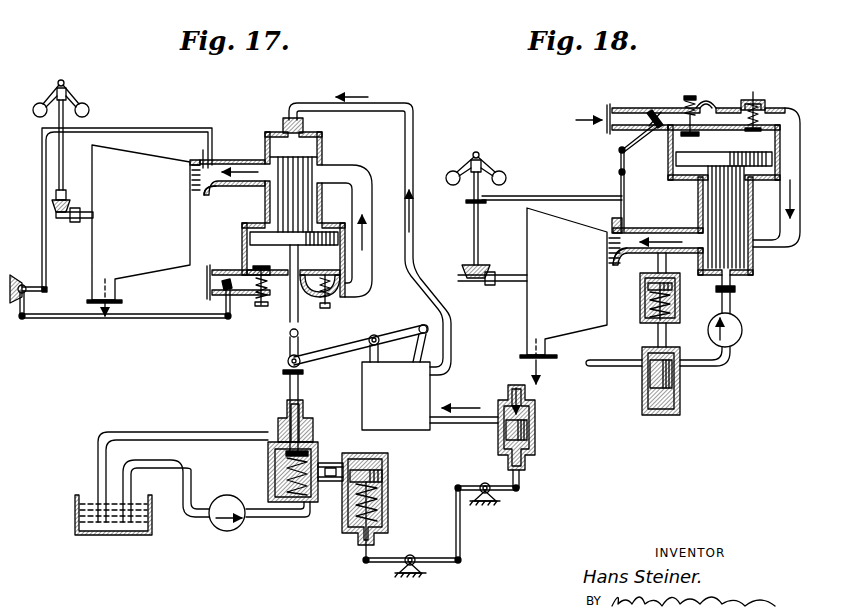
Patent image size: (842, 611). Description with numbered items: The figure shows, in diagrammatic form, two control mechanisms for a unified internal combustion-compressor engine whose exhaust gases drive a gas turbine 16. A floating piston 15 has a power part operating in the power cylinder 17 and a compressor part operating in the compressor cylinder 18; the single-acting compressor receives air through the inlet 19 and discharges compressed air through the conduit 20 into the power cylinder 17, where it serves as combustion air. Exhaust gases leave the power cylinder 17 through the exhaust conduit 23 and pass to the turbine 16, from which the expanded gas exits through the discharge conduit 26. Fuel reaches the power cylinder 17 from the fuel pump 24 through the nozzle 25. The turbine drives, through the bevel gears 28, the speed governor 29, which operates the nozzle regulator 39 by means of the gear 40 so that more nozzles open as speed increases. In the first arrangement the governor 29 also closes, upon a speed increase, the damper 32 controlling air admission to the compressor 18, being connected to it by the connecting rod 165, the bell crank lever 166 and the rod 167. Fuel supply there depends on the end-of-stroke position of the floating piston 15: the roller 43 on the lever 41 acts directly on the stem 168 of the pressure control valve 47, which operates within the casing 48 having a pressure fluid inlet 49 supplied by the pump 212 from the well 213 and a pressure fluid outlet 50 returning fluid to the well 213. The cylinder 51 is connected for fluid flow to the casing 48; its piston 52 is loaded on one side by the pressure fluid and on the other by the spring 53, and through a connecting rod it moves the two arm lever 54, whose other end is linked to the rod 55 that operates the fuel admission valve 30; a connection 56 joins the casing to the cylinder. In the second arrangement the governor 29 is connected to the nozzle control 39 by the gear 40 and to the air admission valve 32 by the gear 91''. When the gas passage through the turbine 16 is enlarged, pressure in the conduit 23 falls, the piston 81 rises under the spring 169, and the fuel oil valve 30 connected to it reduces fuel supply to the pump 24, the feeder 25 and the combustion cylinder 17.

In FIG. 17, the floating piston 15 is at (296, 207).
In FIG. 17, the gas turbine 16 is at (146, 222).
In FIG. 18, the gas turbine 16 is at (574, 281).
In FIG. 17, the power cylinder 17 is at (307, 143).
In FIG. 18, the power cylinder 17 is at (740, 276).
In FIG. 17, the compressor cylinder 18 is at (252, 262).
In FIG. 18, the compressor cylinder 18 is at (720, 136).
In FIG. 17, the inlet 19 is at (250, 268).
In FIG. 18, the inlet 19 is at (610, 106).
In FIG. 17, the conduit 20 is at (370, 172).
In FIG. 18, the conduit 20 is at (788, 249).
In FIG. 17, the exhaust conduit 23 is at (233, 166).
In FIG. 18, the exhaust conduit 23 is at (659, 232).
In FIG. 17, the fuel pump 24 is at (396, 396).
In FIG. 18, the fuel pump 24 is at (742, 340).
In FIG. 17, the nozzle 25 is at (285, 122).
In FIG. 18, the nozzle 25 is at (735, 300).
In FIG. 17, the discharge conduit 26 is at (122, 290).
In FIG. 18, the discharge conduit 26 is at (550, 349).
In FIG. 17, the bevel gears 28 is at (60, 225).
In FIG. 18, the bevel gears 28 is at (481, 286).
In FIG. 17, the speed governor 29 is at (61, 80).
In FIG. 18, the speed governor 29 is at (478, 153).
In FIG. 17, the fuel valve 30 is at (498, 445).
In FIG. 18, the fuel valve 30 is at (680, 392).
In FIG. 17, the damper 32 is at (222, 285).
In FIG. 18, the damper 32 is at (658, 110).
In FIG. 17, the nozzle regulator 39 is at (212, 195).
In FIG. 18, the nozzle regulator 39 is at (616, 268).
In FIG. 17, the gear 40 is at (137, 128).
In FIG. 18, the gear 40 is at (545, 196).
In FIG. 17, the lever 41 is at (315, 350).
In FIG. 17, the roller 43 is at (287, 360).
In FIG. 17, the pressure control valve 47 is at (285, 453).
In FIG. 17, the casing 48 is at (268, 476).
In FIG. 17, the pressure fluid inlet 49 is at (280, 519).
In FIG. 17, the pressure fluid outlet 50 is at (185, 432).
In FIG. 17, the cylinder 51 is at (380, 462).
In FIG. 17, the piston 52 is at (382, 480).
In FIG. 17, the spring 53 is at (378, 514).
In FIG. 17, the two arm lever 54 is at (412, 556).
In FIG. 17, the rod 55 is at (461, 536).
In FIG. 17, the connecting pipe 56 is at (333, 463).
In FIG. 18, the piston 81 is at (648, 298).
In FIG. 18, the gear 91'' is at (621, 178).
In FIG. 17, the connecting rod 165 is at (43, 212).
In FIG. 17, the bell crank lever 166 is at (27, 304).
In FIG. 17, the rod 167 is at (75, 318).
In FIG. 17, the stem 168 is at (290, 384).
In FIG. 18, the spring 169 is at (672, 313).
In FIG. 17, the pump 212 is at (222, 530).
In FIG. 17, the well 213 is at (140, 532).